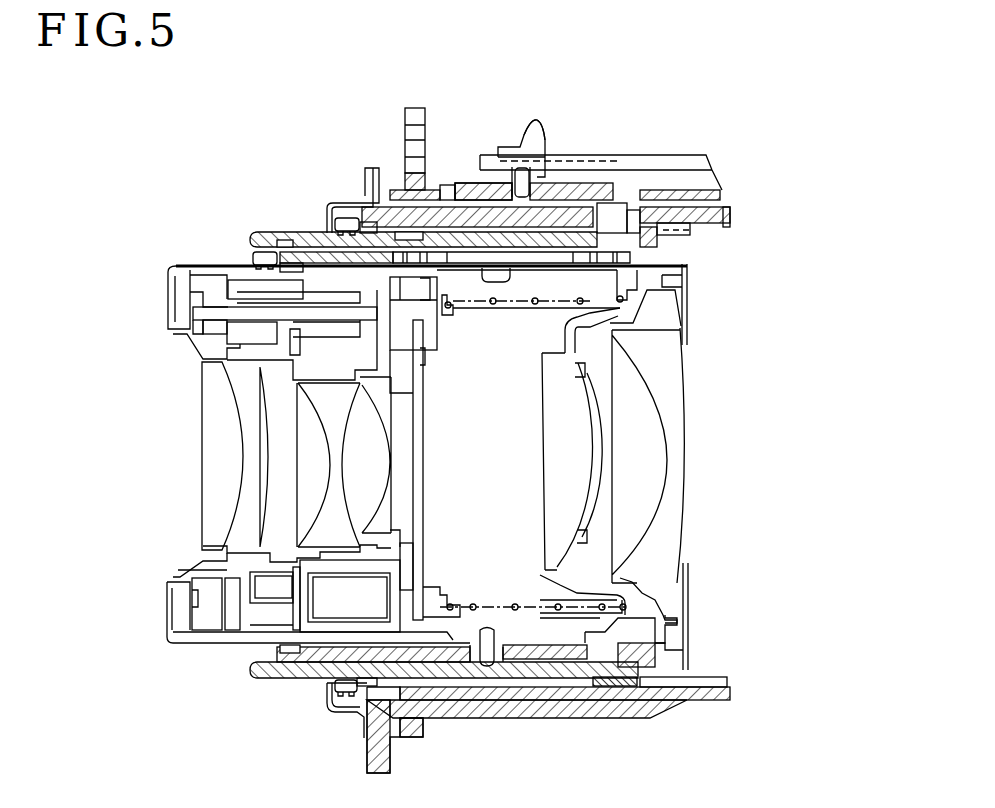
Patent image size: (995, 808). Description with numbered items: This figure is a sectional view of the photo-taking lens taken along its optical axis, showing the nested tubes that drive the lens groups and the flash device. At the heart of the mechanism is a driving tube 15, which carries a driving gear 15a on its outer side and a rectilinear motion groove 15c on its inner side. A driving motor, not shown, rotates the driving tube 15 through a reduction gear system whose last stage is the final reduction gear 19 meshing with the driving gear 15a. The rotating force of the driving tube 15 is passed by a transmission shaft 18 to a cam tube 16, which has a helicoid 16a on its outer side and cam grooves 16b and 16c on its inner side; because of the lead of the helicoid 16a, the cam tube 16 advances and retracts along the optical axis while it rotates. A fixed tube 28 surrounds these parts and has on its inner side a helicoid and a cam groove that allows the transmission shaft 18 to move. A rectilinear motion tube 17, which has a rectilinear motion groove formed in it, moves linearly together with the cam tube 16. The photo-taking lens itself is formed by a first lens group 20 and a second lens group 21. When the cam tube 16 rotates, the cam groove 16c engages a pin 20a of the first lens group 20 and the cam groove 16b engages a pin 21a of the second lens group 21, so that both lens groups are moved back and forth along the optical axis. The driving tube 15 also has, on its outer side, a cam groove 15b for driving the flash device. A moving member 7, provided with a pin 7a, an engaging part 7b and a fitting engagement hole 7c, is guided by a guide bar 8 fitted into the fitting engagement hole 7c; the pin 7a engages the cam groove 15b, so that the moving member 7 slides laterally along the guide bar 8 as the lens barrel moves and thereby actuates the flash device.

The moving member 7 is at (521, 150).
The pin 7a is at (530, 167).
The engaging part 7b is at (533, 148).
The fitting engagement hole 7c is at (618, 222).
The guide bar 8 is at (697, 160).
The driving tube 15 is at (467, 187).
The driving gear 15a is at (378, 172).
The cam groove 15b is at (511, 193).
The rectilinear motion groove 15c is at (708, 226).
The cam tube 16 is at (563, 673).
The helicoid 16a is at (655, 670).
The cam groove 16b is at (603, 668).
The cam groove 16c is at (485, 662).
The rectilinear motion tube 17 is at (523, 657).
The transmission shaft 18 is at (655, 193).
The final reduction gear 19 is at (405, 113).
The first lens group 20 is at (405, 461).
The pin 20a is at (480, 662).
The second lens group 21 is at (534, 460).
The pin 21a is at (633, 683).
The fixed tube 28 is at (710, 693).